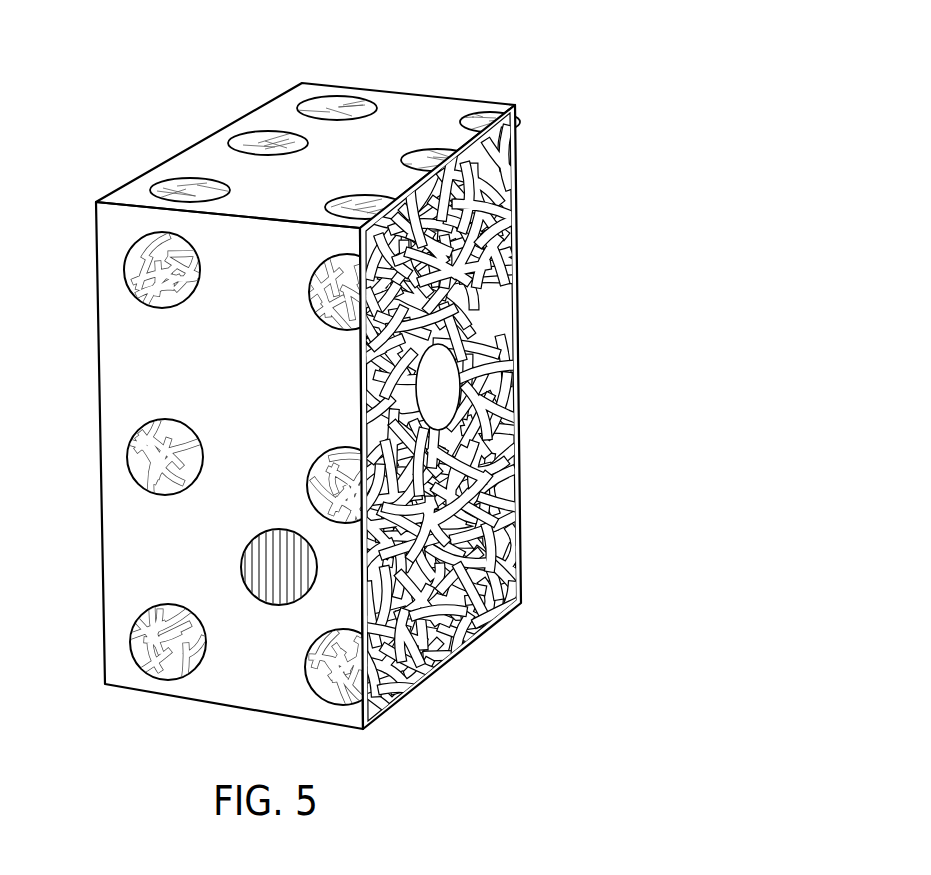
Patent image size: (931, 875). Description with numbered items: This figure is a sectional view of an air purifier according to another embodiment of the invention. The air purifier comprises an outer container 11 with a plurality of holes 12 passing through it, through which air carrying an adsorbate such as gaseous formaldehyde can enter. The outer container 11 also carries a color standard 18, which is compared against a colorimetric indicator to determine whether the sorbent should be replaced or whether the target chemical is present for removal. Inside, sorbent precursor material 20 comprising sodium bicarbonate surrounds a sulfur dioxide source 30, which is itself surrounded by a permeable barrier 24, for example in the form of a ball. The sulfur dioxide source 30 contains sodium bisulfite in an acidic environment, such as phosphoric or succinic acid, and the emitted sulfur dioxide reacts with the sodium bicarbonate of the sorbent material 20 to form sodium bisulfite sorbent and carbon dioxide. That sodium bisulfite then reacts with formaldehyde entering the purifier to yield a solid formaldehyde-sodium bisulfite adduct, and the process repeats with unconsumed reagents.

The outer container 11 is at (411, 90).
The holes 12 is at (256, 132).
The color standard 18 is at (241, 562).
The sorbent material 20 is at (521, 298).
The permeable barrier 24 is at (522, 367).
The sulfur dioxide source 30 is at (452, 390).